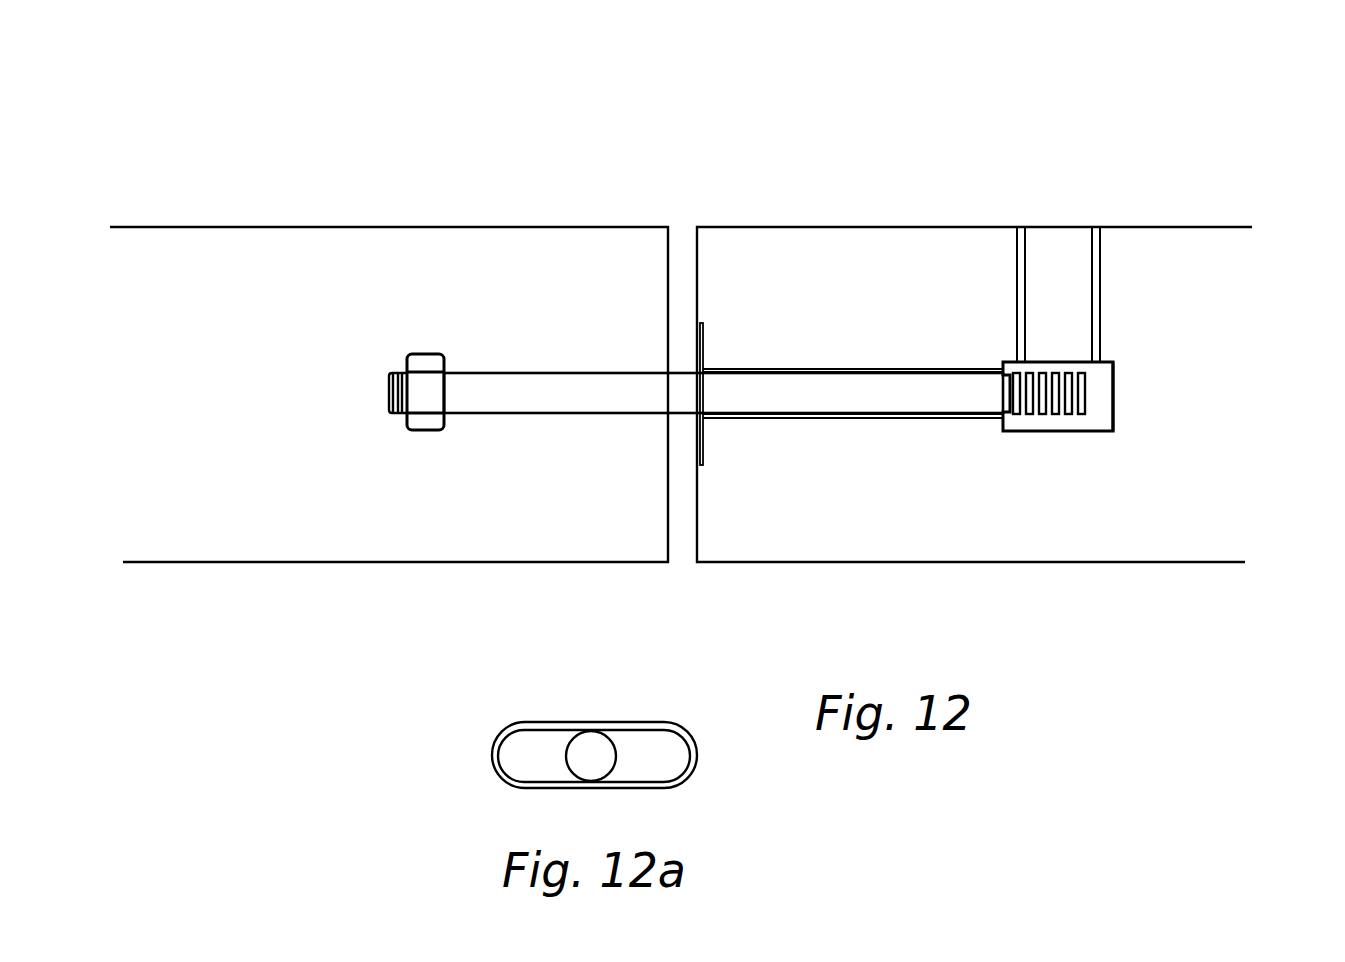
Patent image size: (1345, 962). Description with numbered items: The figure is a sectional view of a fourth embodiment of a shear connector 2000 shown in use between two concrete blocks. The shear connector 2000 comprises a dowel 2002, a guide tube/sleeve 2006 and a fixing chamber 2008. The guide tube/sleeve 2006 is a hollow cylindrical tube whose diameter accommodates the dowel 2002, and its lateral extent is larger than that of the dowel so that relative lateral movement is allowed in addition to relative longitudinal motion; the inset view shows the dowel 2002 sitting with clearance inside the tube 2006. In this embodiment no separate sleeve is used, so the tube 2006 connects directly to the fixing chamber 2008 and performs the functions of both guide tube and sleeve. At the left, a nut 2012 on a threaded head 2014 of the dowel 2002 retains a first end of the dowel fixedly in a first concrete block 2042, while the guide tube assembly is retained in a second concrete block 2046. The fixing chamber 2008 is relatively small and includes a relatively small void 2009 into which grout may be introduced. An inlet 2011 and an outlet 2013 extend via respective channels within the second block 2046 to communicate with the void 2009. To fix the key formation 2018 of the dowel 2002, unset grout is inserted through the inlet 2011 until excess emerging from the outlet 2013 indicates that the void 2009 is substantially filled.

In FIG. 12, the shear connector 2000 is at (728, 336).
In FIG. 12, the dowel 2002 is at (515, 385).
In FIG. 12A, the dowel 2002 is at (591, 752).
In FIG. 12, the guide tube/sleeve 2006 is at (832, 367).
In FIG. 12A, the guide tube/sleeve 2006 is at (692, 776).
In FIG. 12, the fixing chamber 2008 is at (1113, 421).
In FIG. 12, the void 2009 is at (1106, 394).
In FIG. 12, the inlet 2011 is at (1022, 228).
In FIG. 12, the nut 2012 is at (425, 433).
In FIG. 12, the outlet 2013 is at (1097, 228).
In FIG. 12, the threaded head 2014 is at (400, 365).
In FIG. 12, the key formation 2018 is at (1043, 425).
In FIG. 12, the first concrete block 2042 is at (188, 522).
In FIG. 12, the second concrete block 2046 is at (1138, 527).